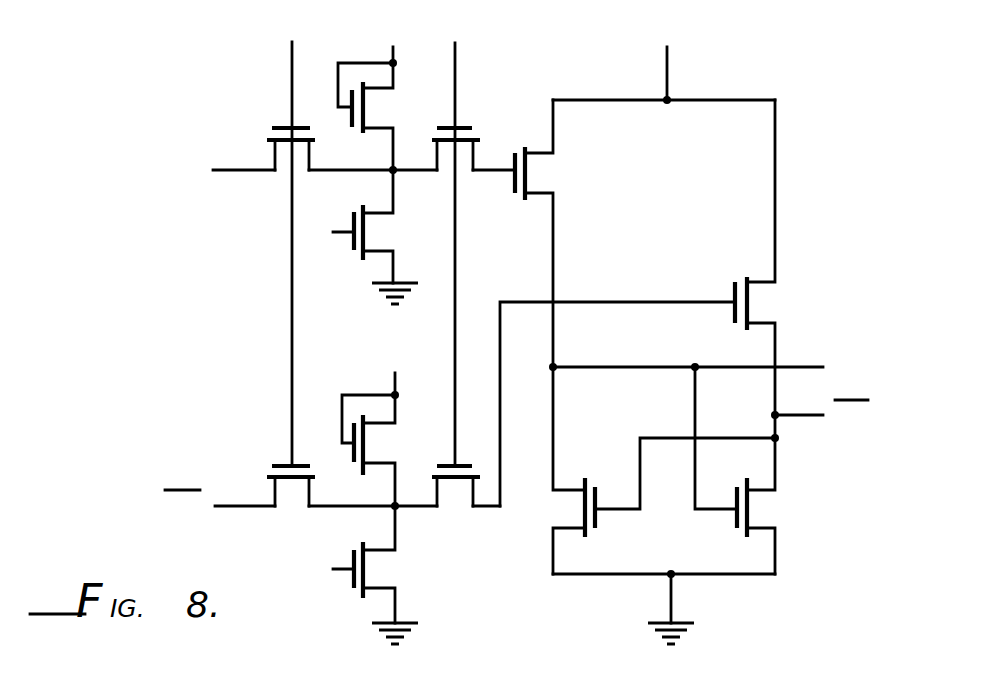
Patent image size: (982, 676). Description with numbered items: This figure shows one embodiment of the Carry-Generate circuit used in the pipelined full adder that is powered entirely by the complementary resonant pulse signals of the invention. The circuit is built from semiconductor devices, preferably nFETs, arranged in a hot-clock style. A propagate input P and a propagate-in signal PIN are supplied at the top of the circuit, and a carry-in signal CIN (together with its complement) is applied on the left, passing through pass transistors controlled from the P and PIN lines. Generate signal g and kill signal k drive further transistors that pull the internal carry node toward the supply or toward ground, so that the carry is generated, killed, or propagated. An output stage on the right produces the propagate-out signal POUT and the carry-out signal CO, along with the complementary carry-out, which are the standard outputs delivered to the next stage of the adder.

The propagate signal input line P is at (291, 258).
The propagate-in signal line PIN is at (456, 258).
The generate signal transistors g is at (365, 328).
The kill signal transistors k is at (364, 338).
The carry-in input lines CIN is at (339, 342).
The propagate-out output line POUT is at (664, 58).
The carry-out output lines CO is at (709, 392).